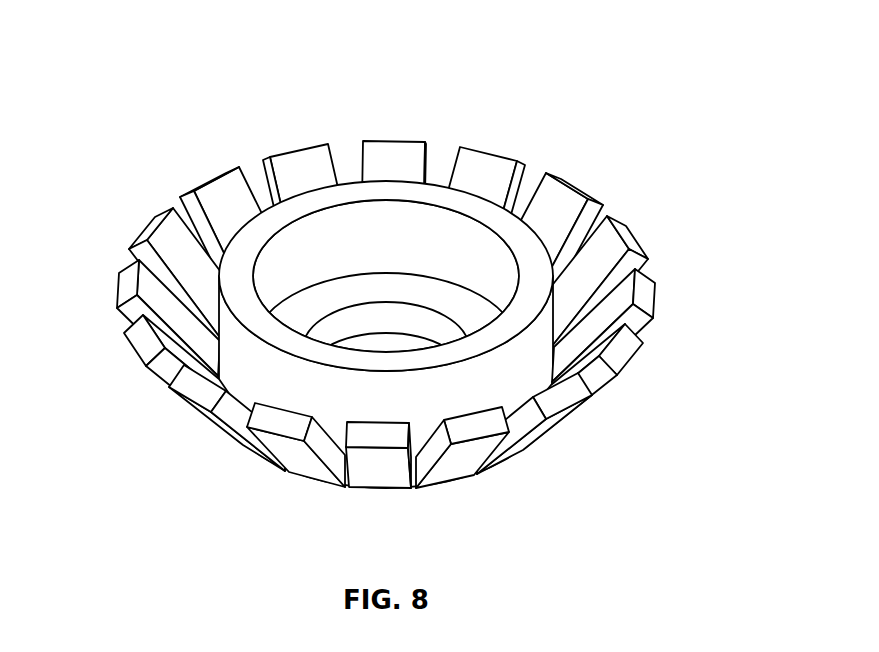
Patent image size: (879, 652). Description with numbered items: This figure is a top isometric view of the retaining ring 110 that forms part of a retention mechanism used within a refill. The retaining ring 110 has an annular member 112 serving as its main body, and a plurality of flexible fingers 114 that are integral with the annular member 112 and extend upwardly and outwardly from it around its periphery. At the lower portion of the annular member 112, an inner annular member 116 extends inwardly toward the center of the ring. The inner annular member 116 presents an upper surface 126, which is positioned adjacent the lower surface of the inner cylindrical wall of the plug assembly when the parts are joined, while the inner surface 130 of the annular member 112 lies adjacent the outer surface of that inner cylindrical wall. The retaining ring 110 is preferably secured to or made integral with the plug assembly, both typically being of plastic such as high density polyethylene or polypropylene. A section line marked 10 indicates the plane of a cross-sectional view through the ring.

The retaining ring 110 is at (128, 58).
The annular member 112 is at (408, 286).
The flexible fingers 114 is at (386, 312).
The inner annular member 116 is at (434, 230).
The upper surface 126 is at (478, 320).
The inner surface 130 is at (374, 289).
The section line 10 is at (45, 200).